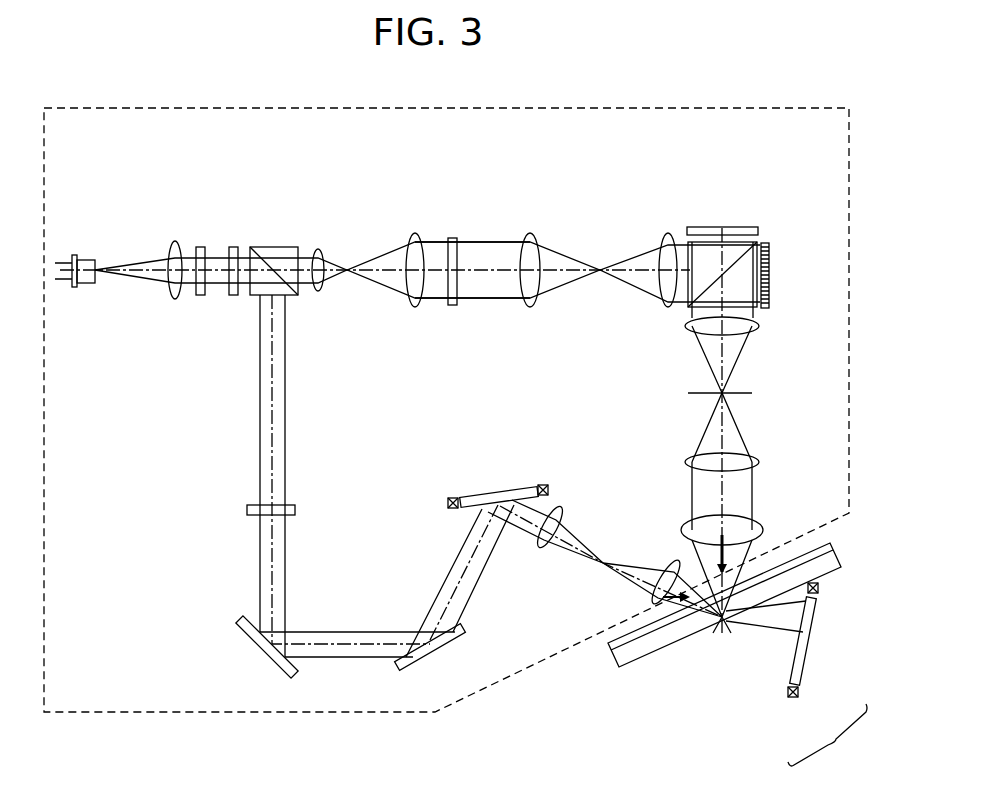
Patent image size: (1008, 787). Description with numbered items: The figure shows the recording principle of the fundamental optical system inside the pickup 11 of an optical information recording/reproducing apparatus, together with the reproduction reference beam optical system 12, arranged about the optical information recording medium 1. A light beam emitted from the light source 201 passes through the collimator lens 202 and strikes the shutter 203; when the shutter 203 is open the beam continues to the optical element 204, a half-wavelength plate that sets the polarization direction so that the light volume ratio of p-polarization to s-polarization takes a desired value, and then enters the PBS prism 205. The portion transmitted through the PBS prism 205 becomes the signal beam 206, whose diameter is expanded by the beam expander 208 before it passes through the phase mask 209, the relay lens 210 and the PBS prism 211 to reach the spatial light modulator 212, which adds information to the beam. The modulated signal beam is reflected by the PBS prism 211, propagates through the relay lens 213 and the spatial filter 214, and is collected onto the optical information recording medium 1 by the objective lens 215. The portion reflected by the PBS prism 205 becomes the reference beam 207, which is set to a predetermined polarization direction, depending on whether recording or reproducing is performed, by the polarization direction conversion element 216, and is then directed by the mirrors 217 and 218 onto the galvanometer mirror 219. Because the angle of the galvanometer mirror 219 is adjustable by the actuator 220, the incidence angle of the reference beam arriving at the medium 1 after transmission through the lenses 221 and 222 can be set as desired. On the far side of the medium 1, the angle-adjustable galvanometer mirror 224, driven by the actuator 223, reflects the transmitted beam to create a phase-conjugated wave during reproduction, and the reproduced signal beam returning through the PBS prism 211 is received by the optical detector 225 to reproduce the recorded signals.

The optical information recording medium 1 is at (612, 665).
The pickup 11 is at (108, 712).
The reproduction reference beam optical system 12 is at (827, 738).
The light source 201 is at (87, 258).
The collimator lens 202 is at (174, 241).
The shutter 203 is at (200, 247).
The optical element 204 is at (234, 247).
The PBS prism 205 is at (252, 290).
The signal beam 206 is at (483, 246).
The reference beam 207 is at (286, 385).
The beam expander 208 is at (317, 226).
The phase mask 209 is at (453, 306).
The relay lens 210 is at (538, 226).
The PBS prism 211 is at (702, 256).
The spatial light modulator 212 is at (772, 287).
The relay lens 213 is at (672, 323).
The spatial filter 214 is at (757, 393).
The objective lens 215 is at (756, 538).
The polarization direction conversion element 216 is at (247, 510).
The mirror 217 is at (262, 650).
The mirror 218 is at (428, 660).
The galvanometer mirror 219 is at (525, 487).
The actuator 220 is at (550, 490).
The lens 221 is at (540, 548).
The lens 222 is at (670, 567).
The actuator 223 is at (797, 700).
The galvanometer mirror 224 is at (803, 662).
The optical detector 225 is at (748, 227).